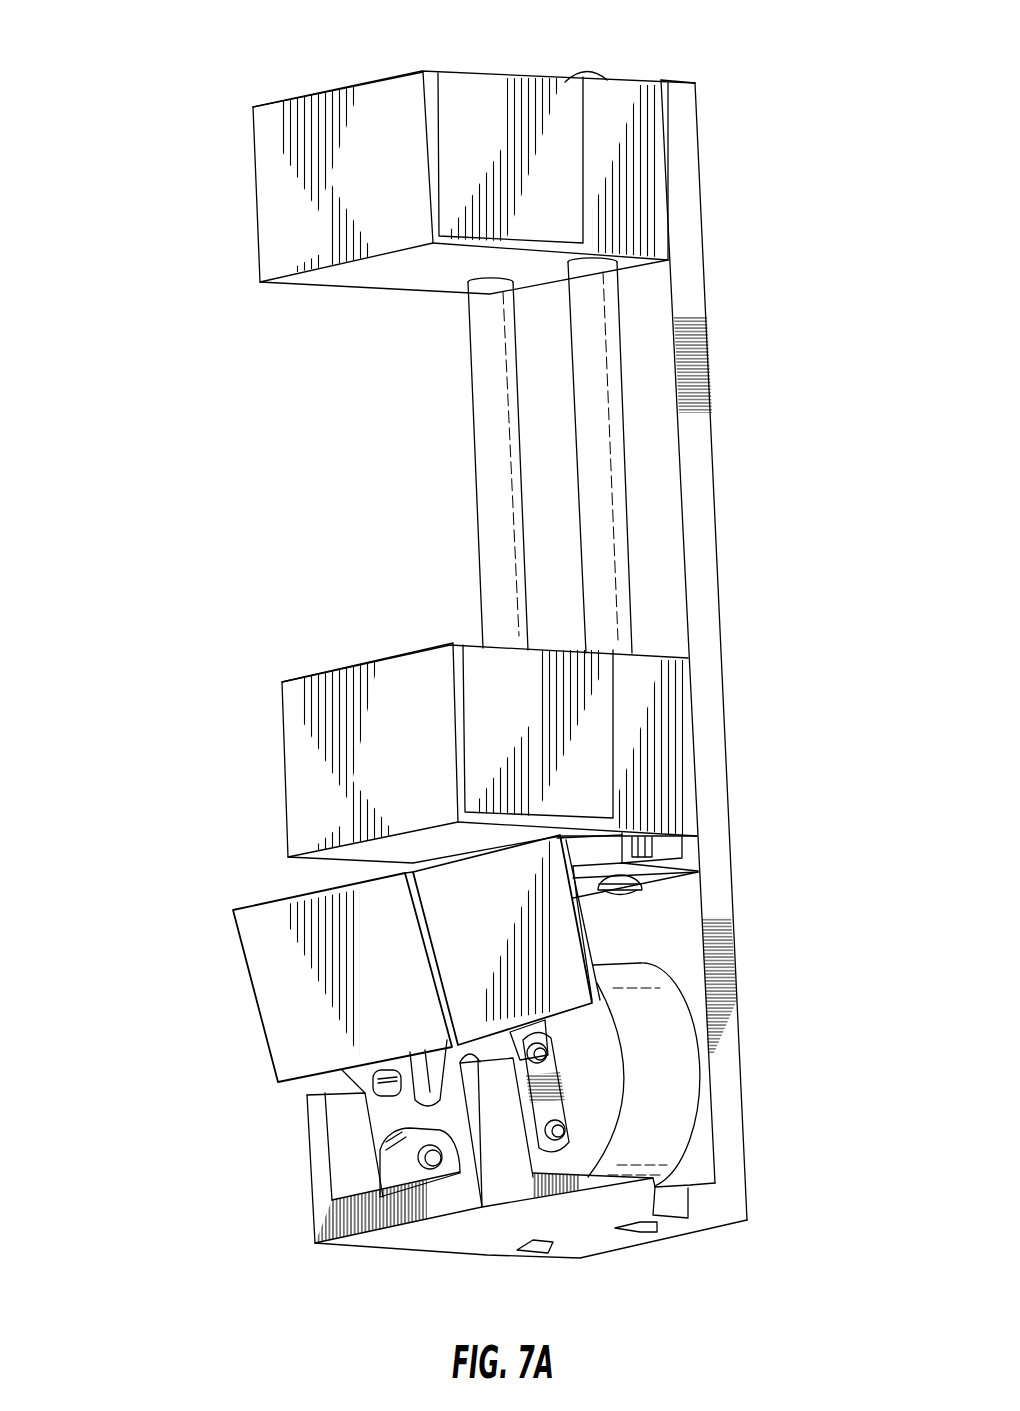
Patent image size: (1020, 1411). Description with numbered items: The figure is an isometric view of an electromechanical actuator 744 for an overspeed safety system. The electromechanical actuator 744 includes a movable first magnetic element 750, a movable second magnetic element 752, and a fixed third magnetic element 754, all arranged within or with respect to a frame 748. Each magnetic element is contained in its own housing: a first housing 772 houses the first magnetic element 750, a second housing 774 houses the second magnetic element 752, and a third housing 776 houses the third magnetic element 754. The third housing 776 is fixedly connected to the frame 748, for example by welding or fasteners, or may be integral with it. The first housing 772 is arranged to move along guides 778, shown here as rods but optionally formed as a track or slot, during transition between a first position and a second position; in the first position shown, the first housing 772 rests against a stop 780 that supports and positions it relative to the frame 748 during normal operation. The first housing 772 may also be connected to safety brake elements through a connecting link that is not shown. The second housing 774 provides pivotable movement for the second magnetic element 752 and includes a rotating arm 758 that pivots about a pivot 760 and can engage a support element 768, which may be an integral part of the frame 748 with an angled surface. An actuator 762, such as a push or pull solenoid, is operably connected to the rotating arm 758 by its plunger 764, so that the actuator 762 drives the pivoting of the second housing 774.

The electromechanical actuator 744 is at (102, 393).
The frame 748 is at (708, 560).
The first magnetic element 750 is at (482, 668).
The second magnetic element 752 is at (437, 892).
The third magnetic element 754 is at (498, 98).
The rotating arm 758 is at (553, 1143).
The pivot 760 is at (410, 1162).
The actuator 762 is at (683, 1063).
The plunger 764 is at (560, 1068).
The support element 768 is at (497, 1135).
The first housing 772 is at (298, 743).
The second housing 774 is at (287, 1020).
The third housing 776 is at (268, 257).
The guides 778 is at (587, 363).
The stop 780 is at (660, 862).